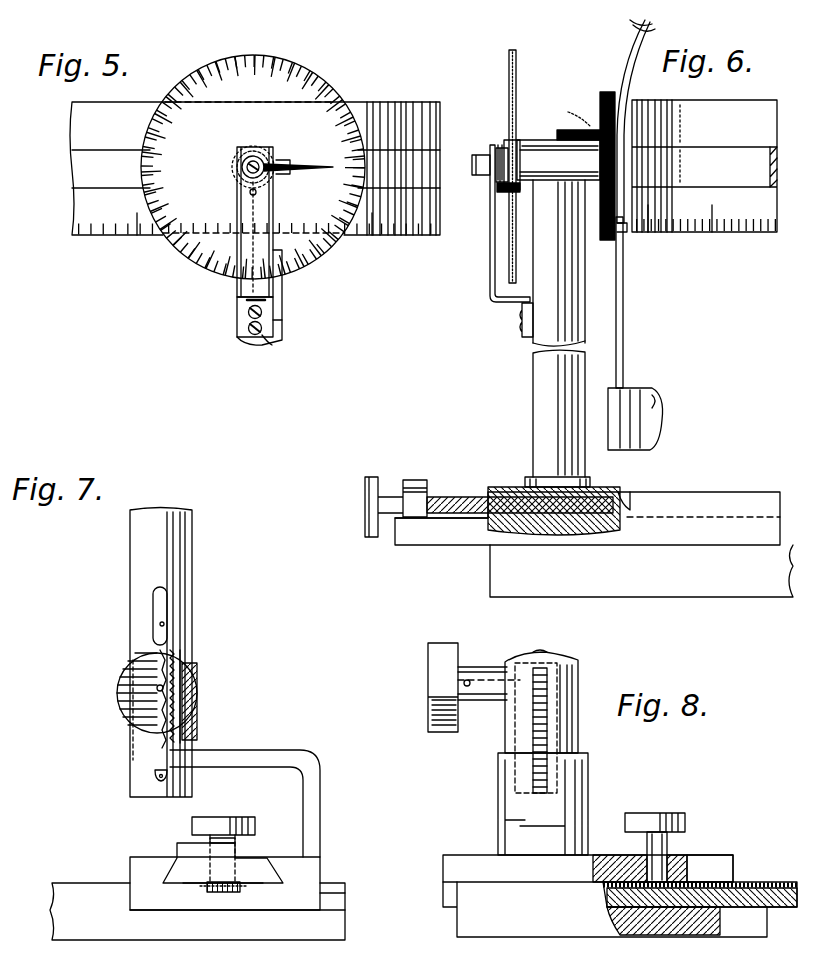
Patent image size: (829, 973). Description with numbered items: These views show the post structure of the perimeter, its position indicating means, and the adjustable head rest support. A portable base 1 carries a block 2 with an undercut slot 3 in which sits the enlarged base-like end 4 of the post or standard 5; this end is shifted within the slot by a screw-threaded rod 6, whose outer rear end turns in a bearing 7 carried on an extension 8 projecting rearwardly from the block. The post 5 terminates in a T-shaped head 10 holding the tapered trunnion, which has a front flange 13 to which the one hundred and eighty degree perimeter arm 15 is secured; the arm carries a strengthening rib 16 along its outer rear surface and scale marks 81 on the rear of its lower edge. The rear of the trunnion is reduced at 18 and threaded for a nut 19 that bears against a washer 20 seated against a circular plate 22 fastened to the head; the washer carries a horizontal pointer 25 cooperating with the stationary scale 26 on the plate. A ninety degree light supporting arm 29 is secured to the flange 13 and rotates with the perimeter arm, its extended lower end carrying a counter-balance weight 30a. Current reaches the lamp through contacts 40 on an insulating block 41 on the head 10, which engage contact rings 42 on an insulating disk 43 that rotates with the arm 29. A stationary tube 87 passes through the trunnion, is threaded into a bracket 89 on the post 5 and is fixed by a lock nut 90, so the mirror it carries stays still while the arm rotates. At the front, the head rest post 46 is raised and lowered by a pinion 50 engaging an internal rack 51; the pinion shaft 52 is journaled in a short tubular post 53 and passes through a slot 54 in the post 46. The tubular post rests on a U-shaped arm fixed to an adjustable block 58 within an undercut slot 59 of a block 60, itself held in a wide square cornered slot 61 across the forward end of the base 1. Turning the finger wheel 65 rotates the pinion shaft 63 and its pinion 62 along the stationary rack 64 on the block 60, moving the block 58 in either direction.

In FIG. 6, the base 1 is at (656, 590).
In FIG. 7, the base 1 is at (306, 930).
In FIG. 8, the base 1 is at (626, 937).
In FIG. 6, the block 2 is at (704, 494).
In FIG. 6, the undercut slot 3 is at (630, 496).
In FIG. 6, the base-like end 4 is at (600, 490).
In FIG. 5, the post or standard 5 is at (238, 342).
In FIG. 6, the post or standard 5 is at (535, 388).
In FIG. 6, the screw-threaded rod 6 is at (458, 496).
In FIG. 6, the bearing 7 is at (413, 476).
In FIG. 6, the extension 8 is at (411, 546).
In FIG. 6, the T-shaped head 10 is at (540, 145).
In FIG. 6, the flange 13 is at (630, 232).
In FIG. 5, the perimeter arm 15 is at (75, 106).
In FIG. 6, the perimeter arm 15 is at (686, 106).
In FIG. 5, the rib 16 is at (76, 174).
In FIG. 6, the rib 16 is at (725, 150).
In FIG. 5, the reduced portion 18 is at (282, 136).
In FIG. 6, the nut 19 is at (497, 152).
In FIG. 5, the washer 20 is at (249, 156).
In FIG. 6, the washer 20 is at (507, 152).
In FIG. 5, the circular plate 22 is at (206, 276).
In FIG. 6, the circular plate 22 is at (507, 56).
In FIG. 5, the pointer 25 is at (300, 178).
In FIG. 6, the pointer 25 is at (506, 186).
In FIG. 5, the stationary scale 26 is at (328, 250).
In FIG. 6, the light supporting arm 29 is at (632, 32).
In FIG. 6, the counter-balance weight 30a is at (662, 404).
In FIG. 6, the contacts 40 is at (597, 118).
In FIG. 7, the contacts 40 is at (214, 969).
In FIG. 6, the insulating block 41 is at (551, 142).
In FIG. 6, the contact rings 42 is at (602, 100).
In FIG. 6, the disk 43 is at (621, 120).
In FIG. 7, the post 46 is at (130, 548).
In FIG. 8, the post 46 is at (560, 656).
In FIG. 7, the pinion 50 is at (160, 714).
In FIG. 8, the pinion 50 is at (536, 670).
In FIG. 7, the rack 51 is at (178, 658).
In FIG. 8, the rack 51 is at (548, 720).
In FIG. 7, the shaft 52 is at (158, 689).
In FIG. 8, the shaft 52 is at (500, 676).
In FIG. 7, the short tubular post 53 is at (198, 701).
In FIG. 8, the short tubular post 53 is at (504, 735).
In FIG. 7, the slot 54 is at (156, 626).
In FIG. 7, the adjustable block 58 is at (178, 865).
In FIG. 8, the adjustable block 58 is at (608, 858).
In FIG. 7, the undercut slot 59 is at (175, 870).
In FIG. 8, the undercut slot 59 is at (700, 870).
In FIG. 7, the block 60 is at (300, 868).
In FIG. 8, the block 60 is at (735, 861).
In FIG. 7, the square cornered slot 61 is at (322, 893).
In FIG. 7, the pinion 62 is at (222, 893).
In FIG. 8, the pinion 62 is at (675, 870).
In FIG. 7, the pinion shaft 63 is at (235, 870).
In FIG. 8, the pinion shaft 63 is at (652, 858).
In FIG. 7, the stationary rack 64 is at (210, 887).
In FIG. 8, the stationary rack 64 is at (742, 900).
In FIG. 7, the finger wheel 65 is at (215, 826).
In FIG. 5, the scale marks 81 is at (114, 239).
In FIG. 6, the scale marks 81 is at (737, 232).
In FIG. 5, the stationary tube 87 is at (243, 178).
In FIG. 5, the bracket 89 is at (246, 256).
In FIG. 6, the bracket 89 is at (491, 256).
In FIG. 5, the lock nut 90 is at (245, 165).
In FIG. 6, the lock nut 90 is at (475, 168).